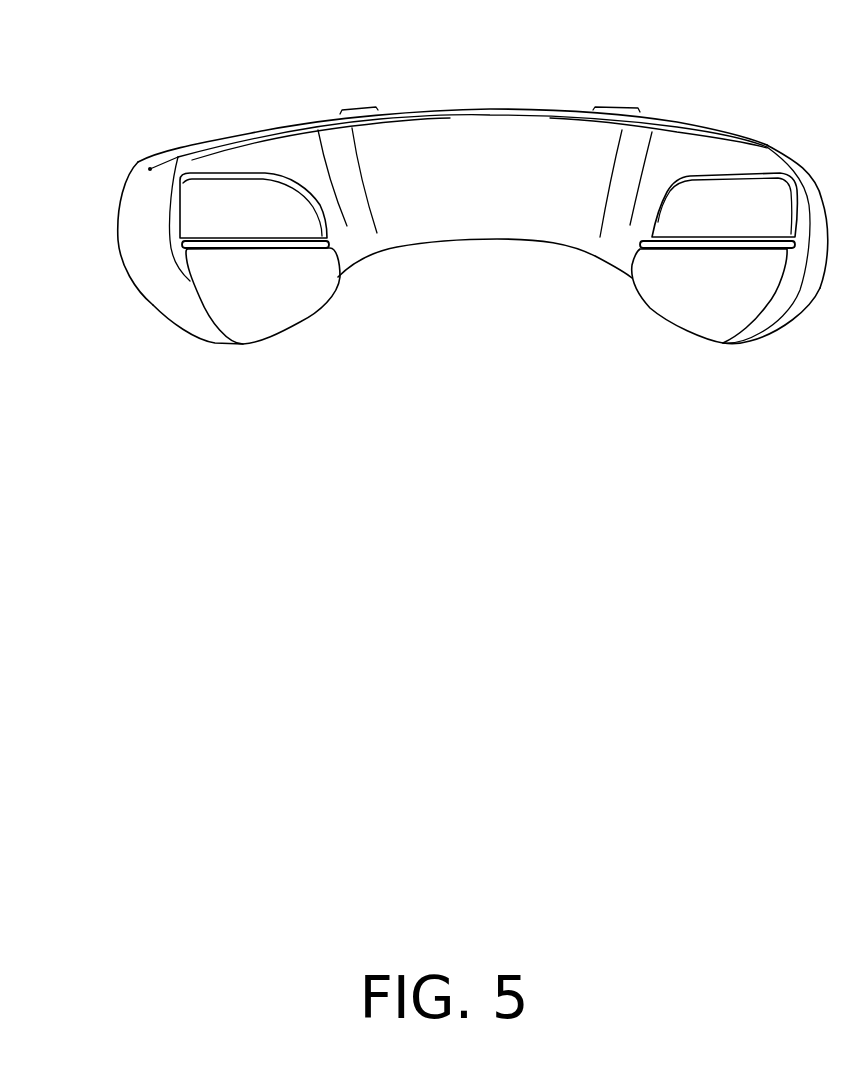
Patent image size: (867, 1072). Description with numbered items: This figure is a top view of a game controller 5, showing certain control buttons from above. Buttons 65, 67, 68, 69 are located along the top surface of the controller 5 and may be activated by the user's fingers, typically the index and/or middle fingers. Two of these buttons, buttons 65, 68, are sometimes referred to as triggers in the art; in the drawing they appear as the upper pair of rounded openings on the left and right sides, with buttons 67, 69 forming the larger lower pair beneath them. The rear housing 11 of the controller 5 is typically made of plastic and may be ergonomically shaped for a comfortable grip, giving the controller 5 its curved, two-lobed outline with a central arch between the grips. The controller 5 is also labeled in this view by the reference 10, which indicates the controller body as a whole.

The game controller 5 is at (99, 342).
The housing 10 is at (160, 148).
The rear housing 11 is at (190, 340).
The button 65 is at (260, 212).
The button 67 is at (273, 305).
The button 68 is at (770, 211).
The button 69 is at (713, 305).